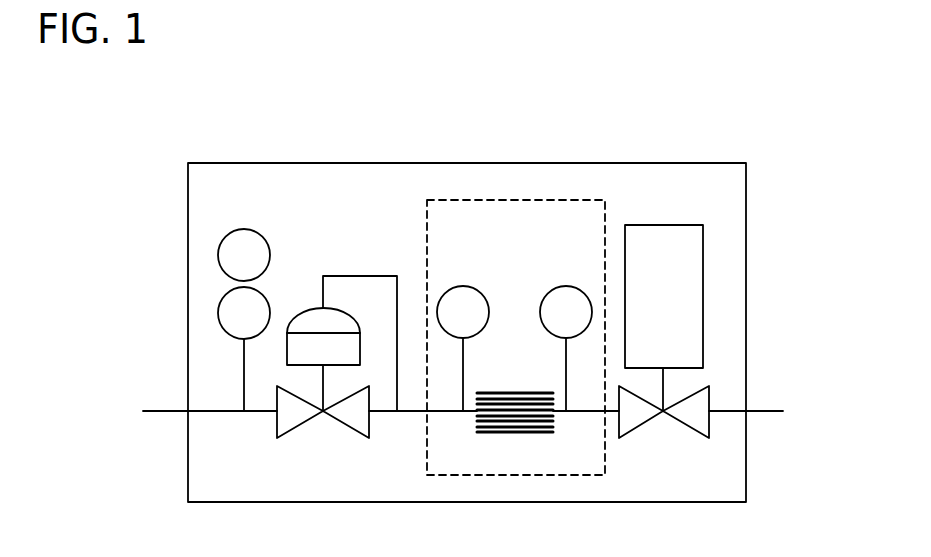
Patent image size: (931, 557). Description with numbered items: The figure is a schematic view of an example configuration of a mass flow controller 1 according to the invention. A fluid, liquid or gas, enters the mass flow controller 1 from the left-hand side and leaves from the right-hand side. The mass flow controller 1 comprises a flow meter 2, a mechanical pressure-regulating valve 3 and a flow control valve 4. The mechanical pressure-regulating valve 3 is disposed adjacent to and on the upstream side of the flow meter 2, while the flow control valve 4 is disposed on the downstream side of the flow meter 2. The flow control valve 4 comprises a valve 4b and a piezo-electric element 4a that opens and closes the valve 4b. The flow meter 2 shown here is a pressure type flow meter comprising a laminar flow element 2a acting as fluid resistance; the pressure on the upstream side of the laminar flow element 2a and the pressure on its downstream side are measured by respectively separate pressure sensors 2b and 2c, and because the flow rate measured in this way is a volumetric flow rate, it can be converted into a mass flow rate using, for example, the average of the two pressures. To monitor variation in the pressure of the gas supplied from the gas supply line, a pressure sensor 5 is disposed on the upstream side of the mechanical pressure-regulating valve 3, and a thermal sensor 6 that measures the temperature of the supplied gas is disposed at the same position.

The mass flow controller 1 is at (600, 163).
The flow meter 2 is at (516, 200).
The laminar flow element 2a is at (513, 434).
The pressure sensor 2b is at (462, 286).
The pressure sensor 2c is at (566, 286).
The mechanical pressure-regulating valve 3 is at (317, 308).
The flow control valve 4 is at (808, 321).
The piezo-electric element 4a is at (703, 315).
The valve 4b is at (709, 398).
The pressure sensor 5 is at (218, 313).
The thermal sensor 6 is at (218, 255).